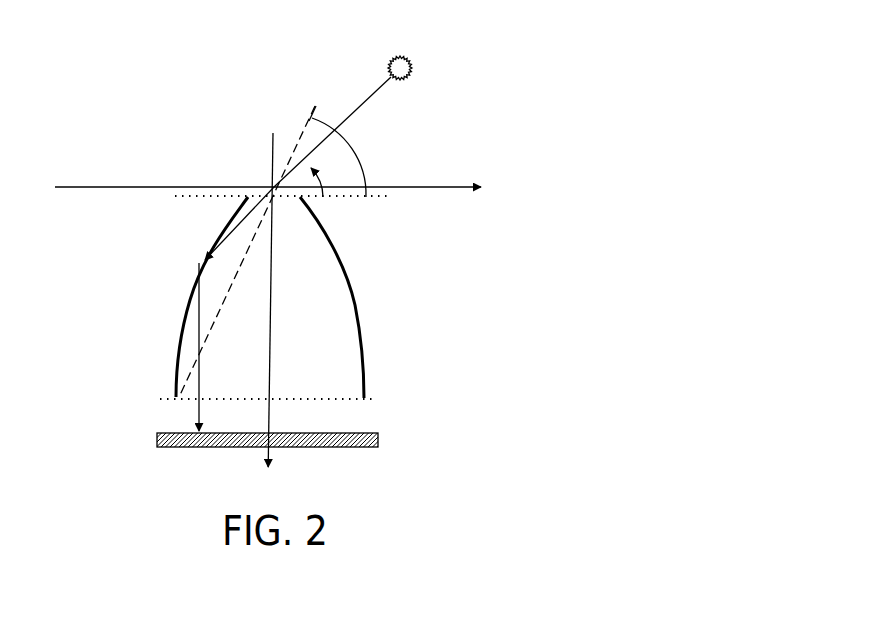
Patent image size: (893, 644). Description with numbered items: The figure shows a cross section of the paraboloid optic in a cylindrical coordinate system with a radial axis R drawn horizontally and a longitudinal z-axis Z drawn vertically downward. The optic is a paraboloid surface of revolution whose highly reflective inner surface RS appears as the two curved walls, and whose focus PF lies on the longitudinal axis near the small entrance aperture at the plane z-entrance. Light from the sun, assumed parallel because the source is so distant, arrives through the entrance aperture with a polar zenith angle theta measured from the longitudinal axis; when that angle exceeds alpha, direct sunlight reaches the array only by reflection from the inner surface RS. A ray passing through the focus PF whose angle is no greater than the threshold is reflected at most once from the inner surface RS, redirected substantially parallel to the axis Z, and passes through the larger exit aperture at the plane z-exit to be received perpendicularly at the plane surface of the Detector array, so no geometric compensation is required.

The radial coordinate axis R is at (268, 174).
The longitudinal z-axis Z is at (288, 315).
The paraboloid focus PF is at (301, 242).
The reflective inner surface RS is at (349, 299).
The entrance aperture plane z-entrance is at (333, 210).
The exit aperture plane z-exit is at (315, 395).
The detector array Detector array is at (352, 360).